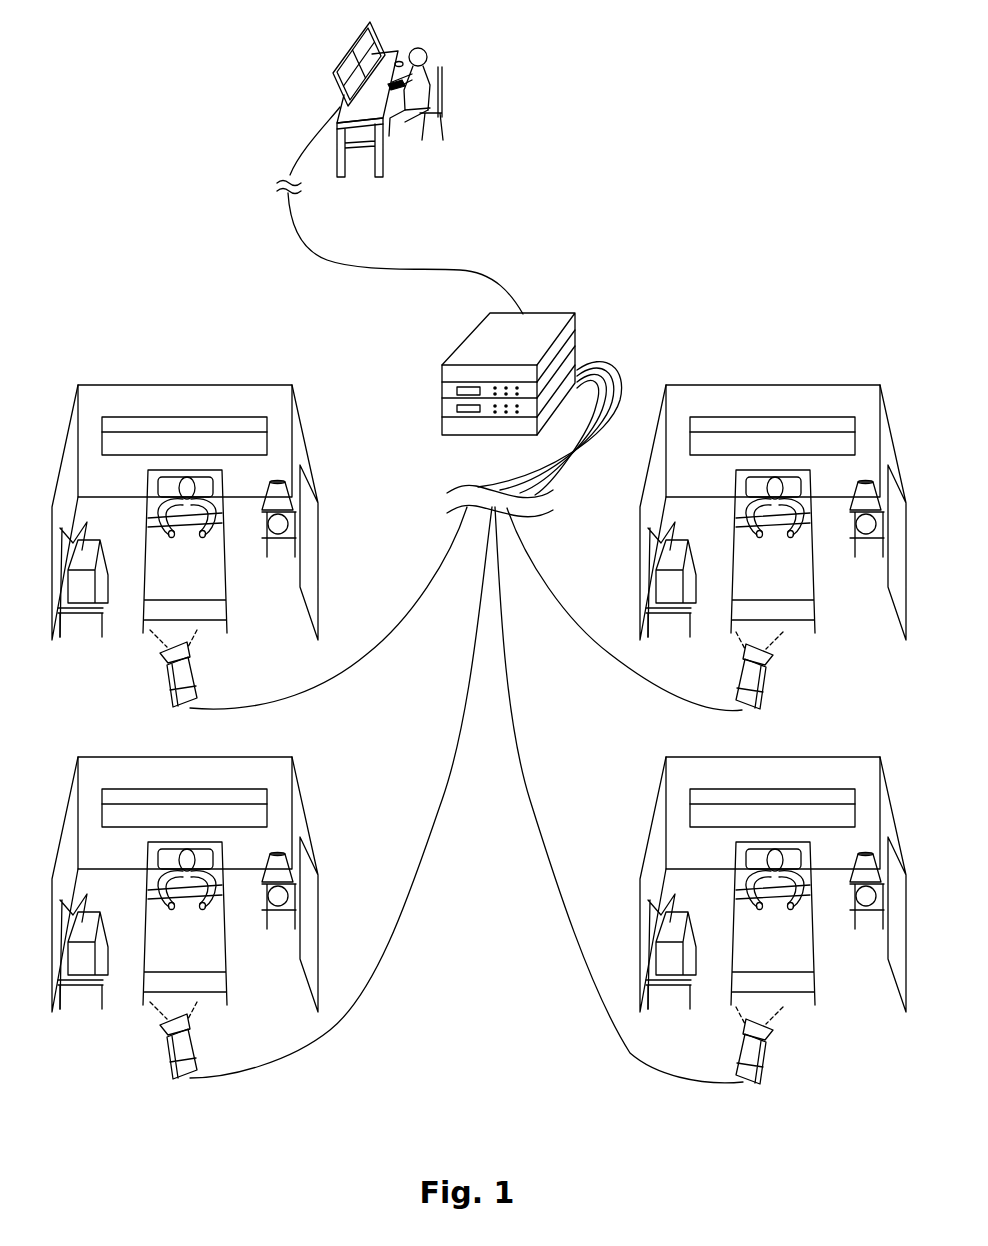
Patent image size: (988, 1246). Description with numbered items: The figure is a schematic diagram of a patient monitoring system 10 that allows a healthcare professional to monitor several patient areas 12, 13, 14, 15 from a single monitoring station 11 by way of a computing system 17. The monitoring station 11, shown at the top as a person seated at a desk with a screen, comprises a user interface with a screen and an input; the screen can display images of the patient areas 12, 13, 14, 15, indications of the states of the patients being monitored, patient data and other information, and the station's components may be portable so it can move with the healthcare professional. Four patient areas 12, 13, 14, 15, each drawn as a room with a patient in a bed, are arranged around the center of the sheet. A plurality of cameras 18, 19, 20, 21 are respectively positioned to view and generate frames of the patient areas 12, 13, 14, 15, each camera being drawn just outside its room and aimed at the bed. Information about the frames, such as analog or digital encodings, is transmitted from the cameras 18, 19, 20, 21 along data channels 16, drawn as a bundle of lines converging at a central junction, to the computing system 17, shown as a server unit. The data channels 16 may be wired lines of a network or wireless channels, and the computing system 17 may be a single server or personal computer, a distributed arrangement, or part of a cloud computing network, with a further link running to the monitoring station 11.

The patient monitoring system 10 is at (727, 108).
The monitoring station 11 is at (322, 47).
The patient area 12 is at (58, 420).
The patient area 13 is at (900, 405).
The patient area 14 is at (62, 772).
The patient area 15 is at (905, 795).
The data channels 16 is at (458, 474).
The computing system 17 is at (557, 314).
The camera 18 is at (168, 690).
The camera 19 is at (768, 690).
The camera 20 is at (183, 1080).
The camera 21 is at (753, 1083).